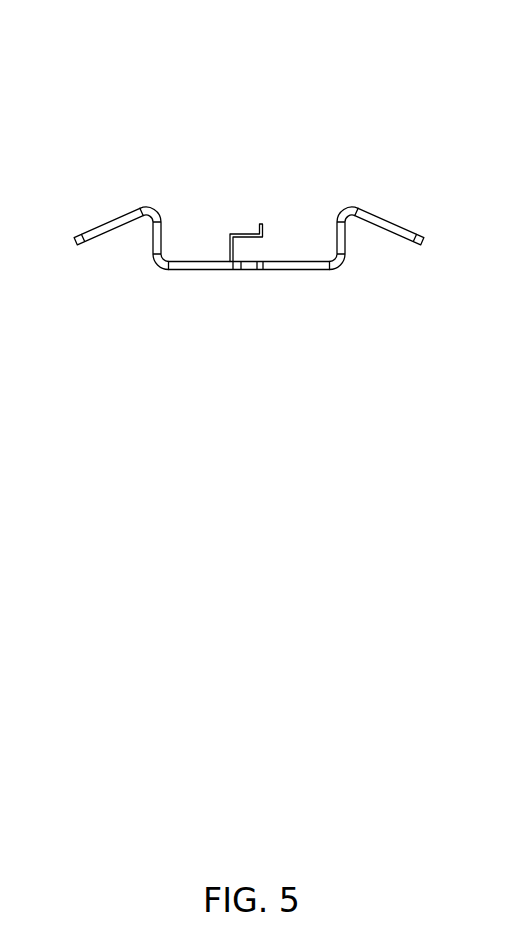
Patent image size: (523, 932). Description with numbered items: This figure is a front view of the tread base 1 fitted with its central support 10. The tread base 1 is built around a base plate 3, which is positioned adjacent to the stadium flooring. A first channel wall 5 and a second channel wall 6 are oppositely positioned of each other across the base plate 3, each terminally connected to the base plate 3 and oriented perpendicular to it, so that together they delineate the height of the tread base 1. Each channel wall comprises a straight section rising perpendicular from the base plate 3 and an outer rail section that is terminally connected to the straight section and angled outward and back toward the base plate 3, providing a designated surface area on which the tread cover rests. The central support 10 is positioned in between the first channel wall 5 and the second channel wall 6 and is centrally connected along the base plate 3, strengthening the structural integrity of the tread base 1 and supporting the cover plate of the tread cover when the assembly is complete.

The tread base 1 is at (138, 88).
The base plate 3 is at (303, 270).
The first channel wall 5 is at (402, 229).
The second channel wall 6 is at (108, 228).
The central support 10 is at (262, 224).